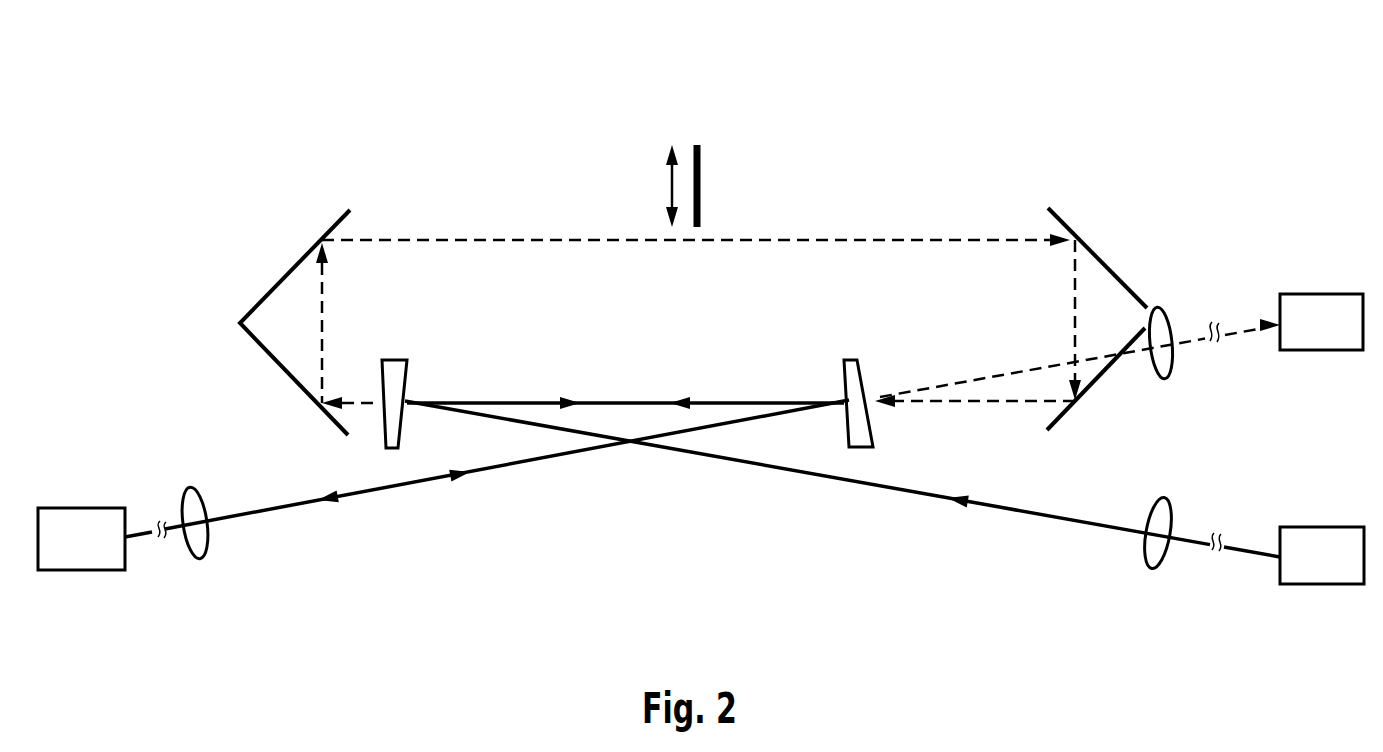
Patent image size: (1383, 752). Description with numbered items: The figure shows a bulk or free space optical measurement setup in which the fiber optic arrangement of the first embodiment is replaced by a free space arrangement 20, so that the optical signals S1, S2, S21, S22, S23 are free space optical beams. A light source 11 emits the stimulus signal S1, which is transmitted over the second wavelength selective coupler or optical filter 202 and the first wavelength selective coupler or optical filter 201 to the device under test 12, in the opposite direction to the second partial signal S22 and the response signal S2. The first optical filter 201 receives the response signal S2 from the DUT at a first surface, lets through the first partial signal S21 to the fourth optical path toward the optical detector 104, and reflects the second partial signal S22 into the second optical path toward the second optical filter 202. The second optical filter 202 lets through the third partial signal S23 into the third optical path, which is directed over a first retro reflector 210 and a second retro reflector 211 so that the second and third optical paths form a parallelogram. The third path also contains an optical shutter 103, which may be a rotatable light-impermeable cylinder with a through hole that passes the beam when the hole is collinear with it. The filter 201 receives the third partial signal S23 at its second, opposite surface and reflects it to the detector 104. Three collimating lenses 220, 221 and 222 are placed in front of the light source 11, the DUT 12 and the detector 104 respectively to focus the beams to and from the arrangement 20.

The free space arrangement 20 is at (1072, 42).
The light source 11 is at (1322, 527).
The device under test 12 is at (82, 508).
The optical shutter 103 is at (700, 182).
The optical detector 104 is at (1322, 294).
The first wavelength selective coupler or optical filter 201 is at (850, 360).
The second wavelength selective coupler or optical filter 202 is at (408, 375).
The first retro reflector 210 is at (290, 272).
The second retro reflector 211 is at (1123, 278).
The collimating lens 220 is at (1160, 558).
The collimating lens 221 is at (190, 487).
The collimating lens 222 is at (1177, 360).
The stimulus signal S1 is at (702, 461).
The response signal S2 is at (469, 492).
The first partial signal S21 is at (1013, 370).
The second partial signal S22 is at (691, 386).
The third partial signal S23 is at (377, 240).